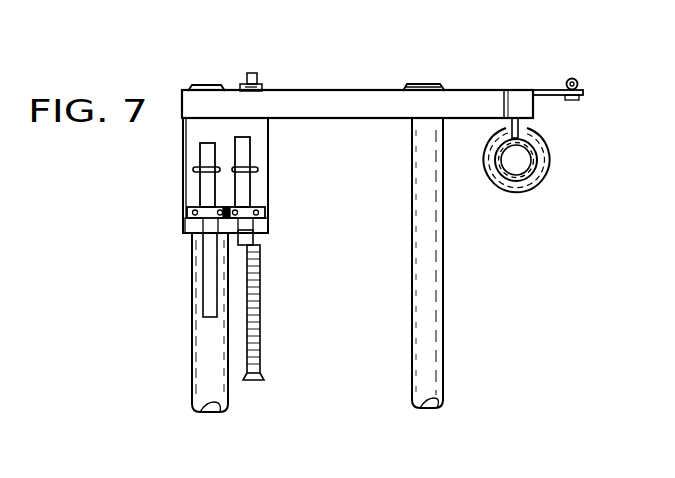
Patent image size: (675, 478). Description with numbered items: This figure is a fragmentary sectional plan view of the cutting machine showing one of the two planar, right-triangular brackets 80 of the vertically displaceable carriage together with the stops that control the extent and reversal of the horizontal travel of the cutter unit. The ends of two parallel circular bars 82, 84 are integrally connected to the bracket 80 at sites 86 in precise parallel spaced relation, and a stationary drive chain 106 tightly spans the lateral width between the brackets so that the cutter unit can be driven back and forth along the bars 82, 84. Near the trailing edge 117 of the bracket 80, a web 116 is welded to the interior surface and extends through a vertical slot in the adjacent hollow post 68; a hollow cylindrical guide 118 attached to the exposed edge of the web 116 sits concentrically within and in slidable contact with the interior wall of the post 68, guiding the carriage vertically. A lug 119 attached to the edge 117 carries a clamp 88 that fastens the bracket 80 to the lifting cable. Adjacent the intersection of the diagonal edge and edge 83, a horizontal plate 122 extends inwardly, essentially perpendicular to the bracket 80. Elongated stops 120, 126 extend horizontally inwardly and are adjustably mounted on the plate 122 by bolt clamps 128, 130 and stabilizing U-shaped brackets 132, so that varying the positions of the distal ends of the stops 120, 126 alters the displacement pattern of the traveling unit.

The bracket 80 is at (337, 91).
The edge 83 is at (398, 114).
The site 86 is at (443, 89).
The clamp 88 is at (576, 80).
The trailing edge 117 is at (540, 90).
The lug 119 is at (522, 102).
The horizontal plate 122 is at (530, 62).
The bolt clamp 128 is at (188, 210).
The stabilizing U-shaped bracket 132 is at (193, 170).
The elongated stop 120 is at (253, 190).
The bolt clamp 130 is at (266, 216).
The circular bar 82 is at (192, 345).
The elongated stop 126 is at (193, 243).
The stationary drive chain 106 is at (258, 289).
The circular bar 84 is at (445, 350).
The web 116 is at (522, 125).
The hollow cylindrical guide 118 is at (540, 143).
The post 68 is at (547, 170).